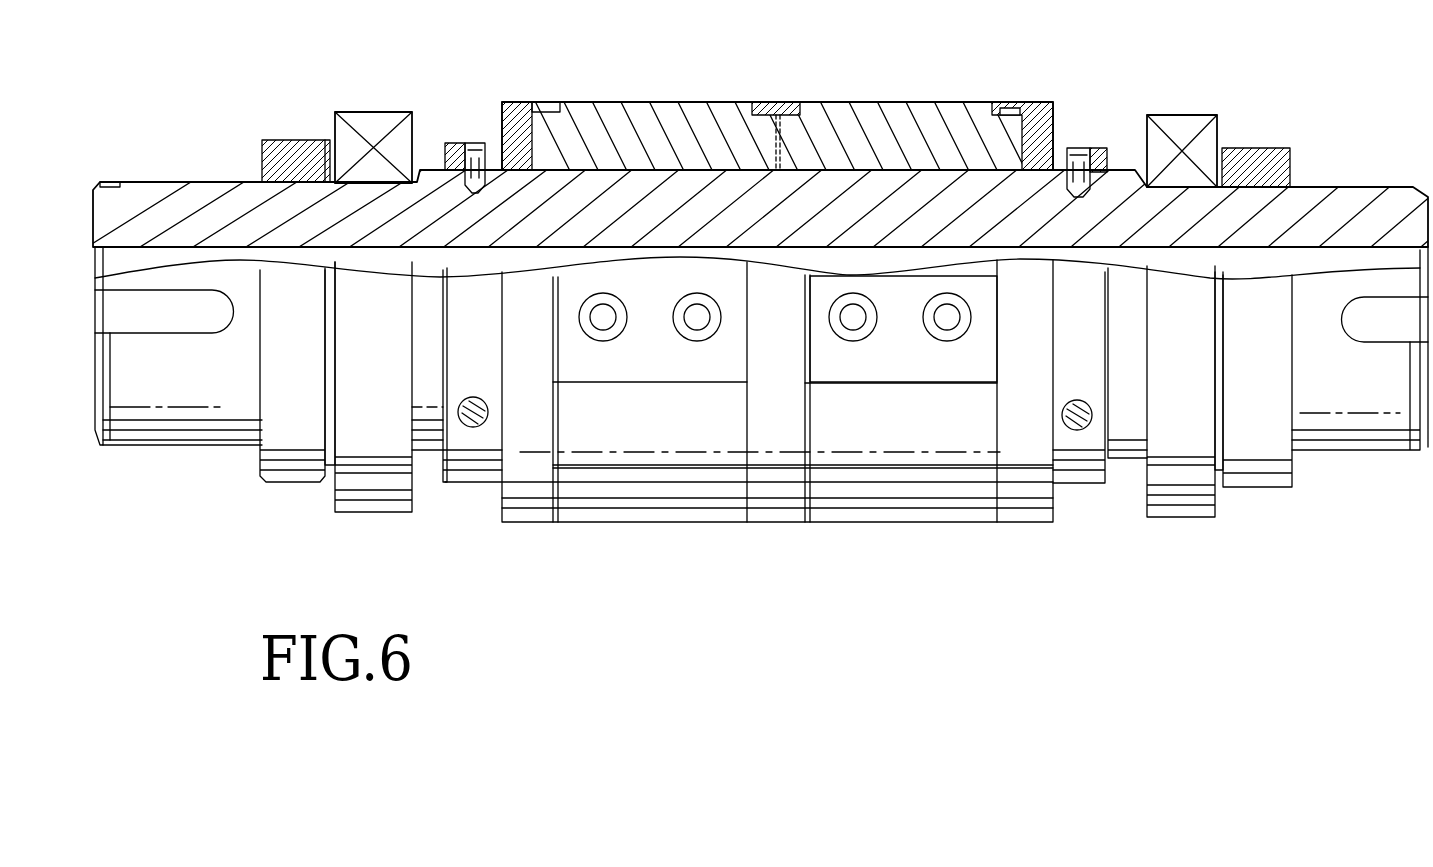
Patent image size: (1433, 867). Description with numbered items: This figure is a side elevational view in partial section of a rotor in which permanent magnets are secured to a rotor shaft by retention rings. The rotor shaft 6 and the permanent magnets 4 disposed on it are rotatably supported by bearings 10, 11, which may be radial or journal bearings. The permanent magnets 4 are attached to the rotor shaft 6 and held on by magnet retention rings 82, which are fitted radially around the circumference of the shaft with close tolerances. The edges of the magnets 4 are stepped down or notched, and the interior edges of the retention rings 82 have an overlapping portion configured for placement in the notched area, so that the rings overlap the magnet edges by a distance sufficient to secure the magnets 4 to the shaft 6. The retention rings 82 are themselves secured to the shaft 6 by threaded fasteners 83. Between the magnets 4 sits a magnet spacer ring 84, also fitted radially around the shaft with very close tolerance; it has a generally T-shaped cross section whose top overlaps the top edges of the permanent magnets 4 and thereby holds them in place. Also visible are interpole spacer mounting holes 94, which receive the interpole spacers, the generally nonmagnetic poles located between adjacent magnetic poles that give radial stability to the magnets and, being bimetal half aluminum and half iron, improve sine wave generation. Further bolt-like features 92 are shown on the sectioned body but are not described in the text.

The permanent magnets 4 is at (640, 112).
The rotor shaft 6 is at (178, 197).
The bearing 10 is at (383, 110).
The bearing 11 is at (1197, 117).
The magnet retention rings 82 is at (545, 102).
The threaded fasteners 83 is at (476, 143).
The magnet spacer ring 84 is at (765, 107).
The bore 92 is at (870, 324).
The interpole spacer mounting holes 94 is at (977, 285).